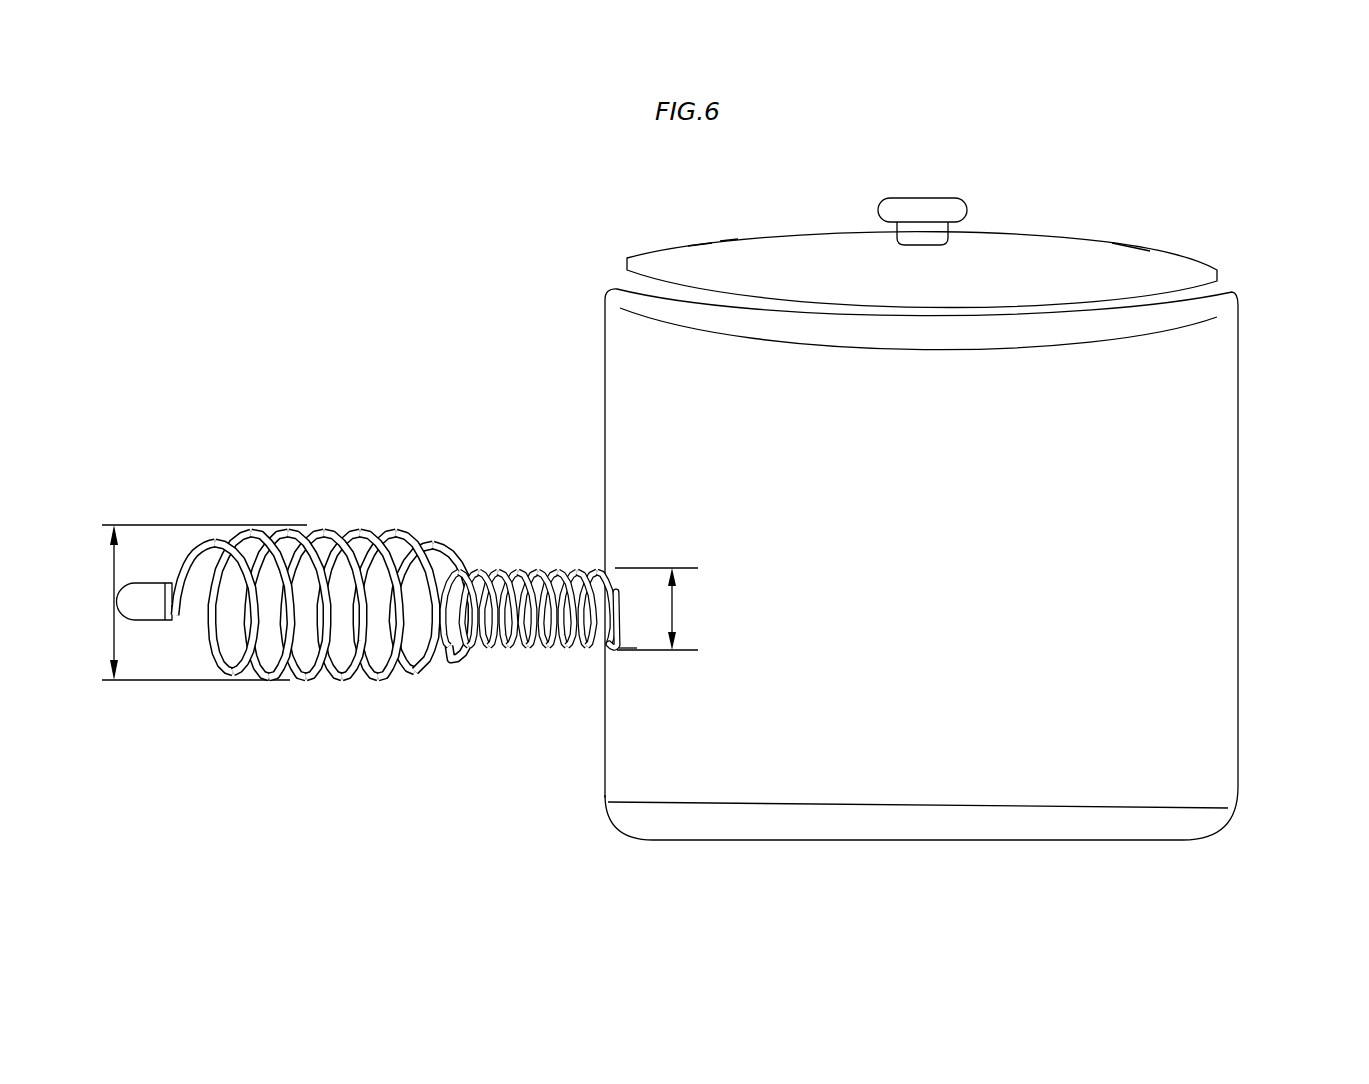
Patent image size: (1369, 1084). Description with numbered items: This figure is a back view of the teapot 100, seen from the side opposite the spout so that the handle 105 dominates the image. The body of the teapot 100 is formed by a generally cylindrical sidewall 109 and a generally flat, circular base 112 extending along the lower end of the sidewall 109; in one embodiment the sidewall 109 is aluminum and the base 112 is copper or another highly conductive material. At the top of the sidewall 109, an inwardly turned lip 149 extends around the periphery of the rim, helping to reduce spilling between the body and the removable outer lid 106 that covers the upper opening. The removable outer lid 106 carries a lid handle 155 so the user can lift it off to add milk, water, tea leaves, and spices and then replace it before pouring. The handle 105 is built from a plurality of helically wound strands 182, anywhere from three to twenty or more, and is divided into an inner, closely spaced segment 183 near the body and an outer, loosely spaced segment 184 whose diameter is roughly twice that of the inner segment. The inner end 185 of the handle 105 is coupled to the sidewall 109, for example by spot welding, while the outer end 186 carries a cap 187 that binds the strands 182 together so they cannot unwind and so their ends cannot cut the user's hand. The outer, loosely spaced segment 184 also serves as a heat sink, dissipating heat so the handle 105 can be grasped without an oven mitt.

The teapot 100 is at (1222, 210).
The handle 105 is at (350, 494).
The removable outer lid 106 is at (1005, 250).
The sidewall 109 is at (782, 480).
The base 112 is at (1060, 830).
The inwardly turned lip 149 is at (1226, 308).
The lid handle 155 is at (974, 185).
The helically wound strands 182 is at (396, 720).
The inner, closely spaced segment 183 is at (607, 655).
The outer, loosely spaced segment 184 is at (443, 757).
The inner end 185 is at (637, 650).
The outer end 186 is at (176, 660).
The cap 187 is at (143, 612).